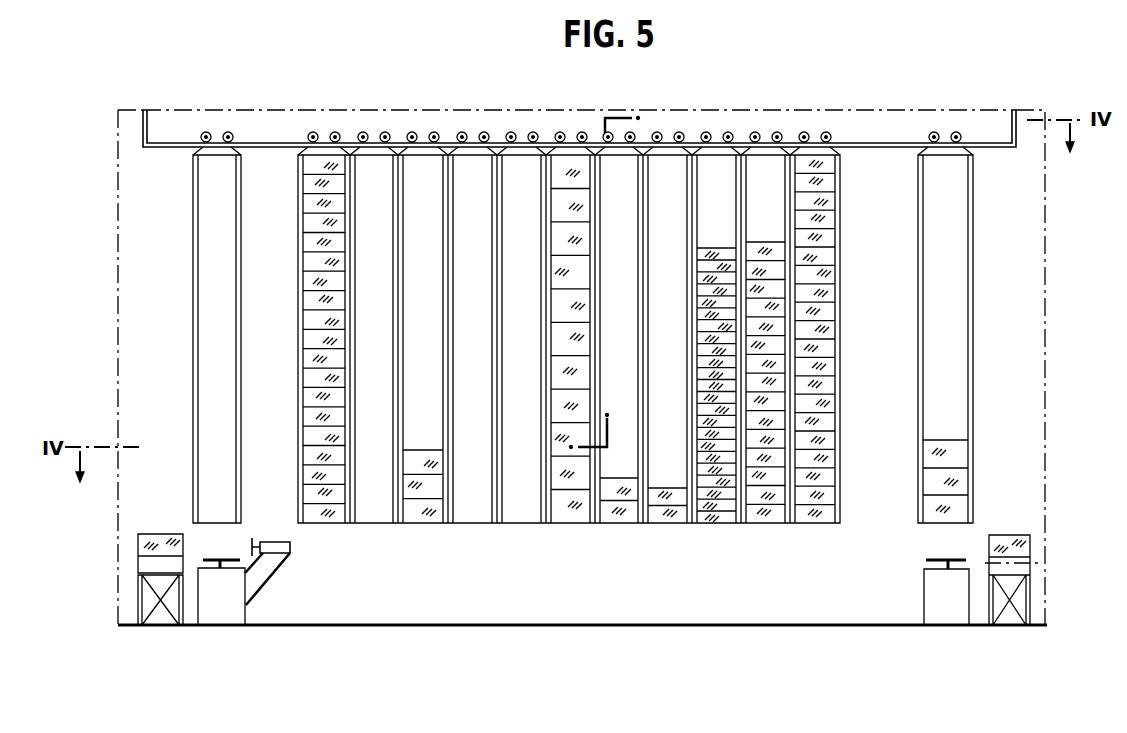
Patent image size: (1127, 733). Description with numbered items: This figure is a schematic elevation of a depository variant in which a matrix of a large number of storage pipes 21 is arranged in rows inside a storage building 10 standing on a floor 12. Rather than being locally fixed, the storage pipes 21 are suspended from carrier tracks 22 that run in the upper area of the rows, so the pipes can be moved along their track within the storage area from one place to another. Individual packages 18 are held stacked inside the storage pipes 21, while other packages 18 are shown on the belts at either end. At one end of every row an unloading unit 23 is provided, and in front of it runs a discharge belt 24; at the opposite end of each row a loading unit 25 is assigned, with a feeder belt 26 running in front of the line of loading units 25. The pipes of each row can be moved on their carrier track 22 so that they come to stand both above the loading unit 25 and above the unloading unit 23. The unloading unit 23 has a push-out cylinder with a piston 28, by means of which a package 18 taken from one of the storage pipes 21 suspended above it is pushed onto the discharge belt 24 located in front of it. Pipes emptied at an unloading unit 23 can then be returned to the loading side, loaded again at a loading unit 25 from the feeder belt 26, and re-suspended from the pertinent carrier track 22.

The storage building 10 is at (118, 366).
The floor 12 is at (731, 627).
The packages 18 is at (830, 273).
The storage pipes 21 is at (212, 328).
The carrier tracks 22 is at (878, 145).
The unloading unit 23 is at (226, 605).
The discharge belt 24 is at (185, 565).
The loading unit 25 is at (925, 596).
The feeder belt 26 is at (1032, 560).
The piston 28 is at (291, 549).